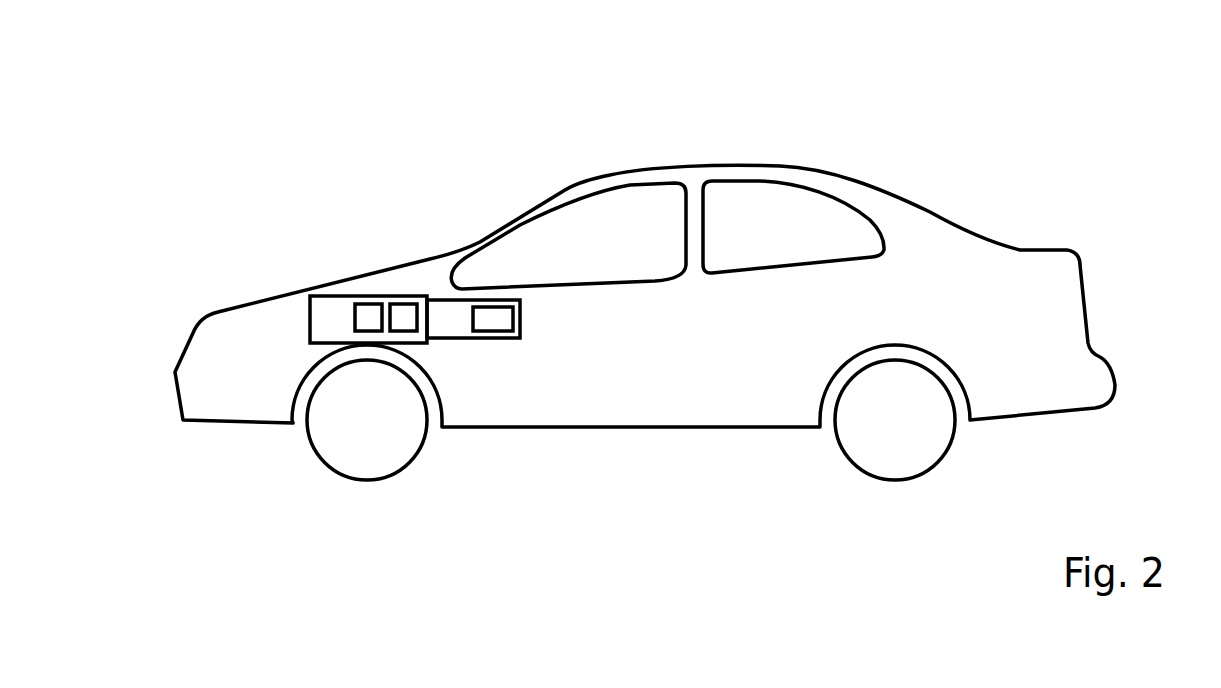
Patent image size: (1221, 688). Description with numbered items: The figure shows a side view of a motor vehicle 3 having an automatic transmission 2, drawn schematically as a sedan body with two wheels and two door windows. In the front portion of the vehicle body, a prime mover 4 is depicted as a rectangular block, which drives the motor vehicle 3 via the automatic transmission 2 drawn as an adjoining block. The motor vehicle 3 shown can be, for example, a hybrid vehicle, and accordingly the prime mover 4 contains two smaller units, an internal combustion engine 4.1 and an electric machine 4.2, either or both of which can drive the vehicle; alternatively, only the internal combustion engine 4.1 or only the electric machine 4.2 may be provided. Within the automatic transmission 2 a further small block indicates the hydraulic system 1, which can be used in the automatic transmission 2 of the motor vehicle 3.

The hydraulic system 1 is at (502, 317).
The automatic transmission 2 is at (443, 317).
The motor vehicle 3 is at (982, 167).
The prime mover 4 is at (328, 308).
The internal combustion engine 4.1 is at (368, 308).
The electric machine 4.2 is at (405, 310).